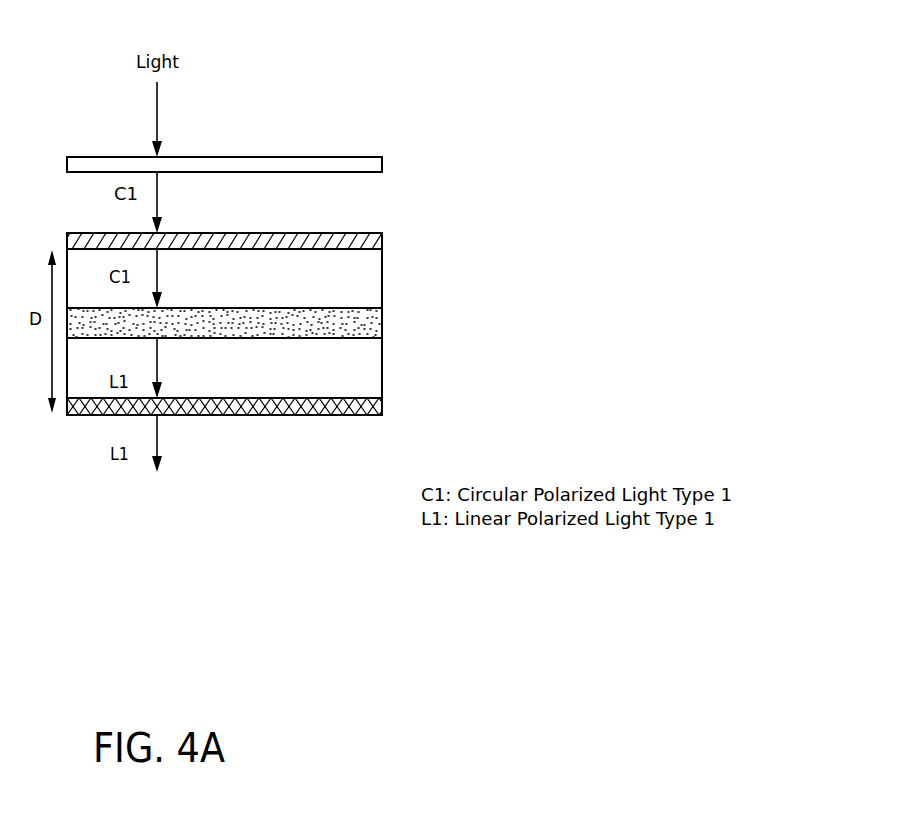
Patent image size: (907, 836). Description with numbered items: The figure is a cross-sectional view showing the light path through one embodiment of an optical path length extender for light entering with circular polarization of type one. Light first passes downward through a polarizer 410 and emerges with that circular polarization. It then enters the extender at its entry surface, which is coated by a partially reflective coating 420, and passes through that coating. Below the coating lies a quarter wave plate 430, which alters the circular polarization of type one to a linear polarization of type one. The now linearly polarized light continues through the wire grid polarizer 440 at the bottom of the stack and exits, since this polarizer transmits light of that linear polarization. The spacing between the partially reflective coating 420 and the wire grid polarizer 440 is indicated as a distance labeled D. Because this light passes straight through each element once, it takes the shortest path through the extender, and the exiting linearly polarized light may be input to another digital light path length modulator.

The polarizer 410 is at (302, 167).
The partially reflective coating 420 is at (378, 242).
The quarter wave plate 430 is at (471, 324).
The wire grid polarizer 440 is at (339, 409).